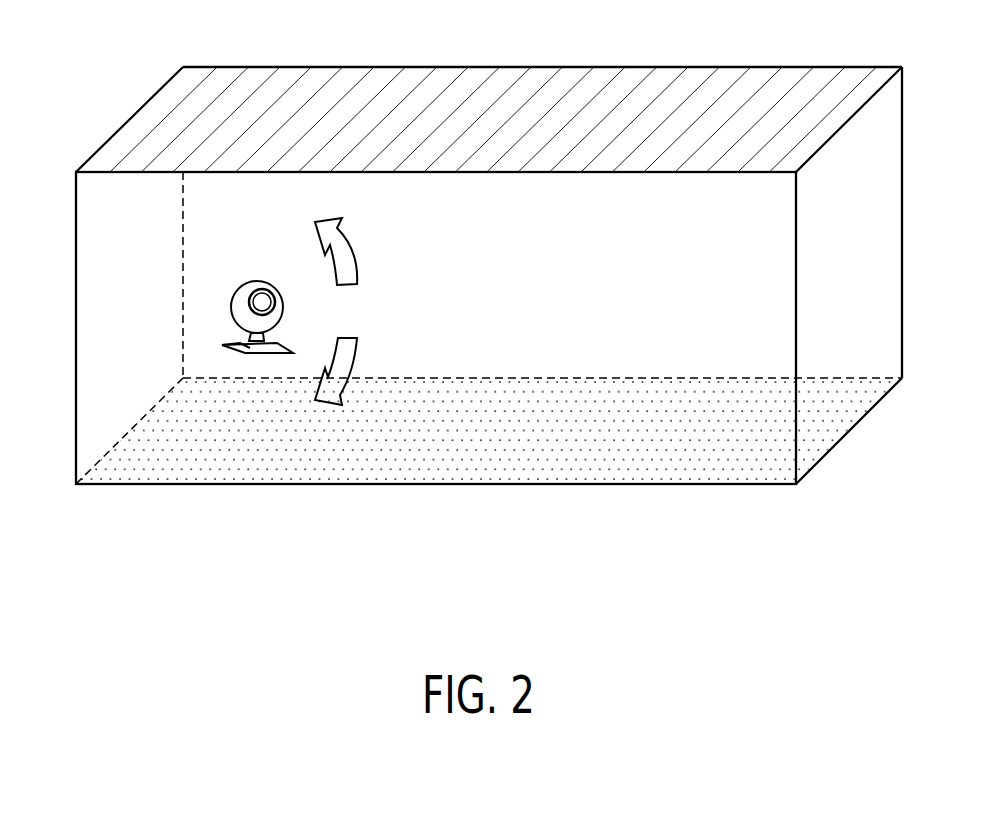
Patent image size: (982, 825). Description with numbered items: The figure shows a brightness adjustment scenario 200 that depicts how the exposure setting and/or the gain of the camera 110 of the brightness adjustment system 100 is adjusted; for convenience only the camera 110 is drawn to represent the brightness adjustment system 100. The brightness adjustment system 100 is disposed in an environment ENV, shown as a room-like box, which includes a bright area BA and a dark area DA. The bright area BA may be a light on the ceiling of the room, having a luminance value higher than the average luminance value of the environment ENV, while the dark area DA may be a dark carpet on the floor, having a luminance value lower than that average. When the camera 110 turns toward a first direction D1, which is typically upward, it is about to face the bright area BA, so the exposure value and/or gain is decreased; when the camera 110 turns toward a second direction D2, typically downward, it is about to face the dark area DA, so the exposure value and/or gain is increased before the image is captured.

The brightness adjustment system 100 is at (235, 286).
The camera 110 is at (257, 317).
The brightness adjustment scenario 200 is at (824, 582).
The environment ENV is at (75, 278).
The bright area BA is at (520, 107).
The dark area DA is at (522, 453).
The first direction D1 is at (356, 251).
The second direction D2 is at (356, 371).